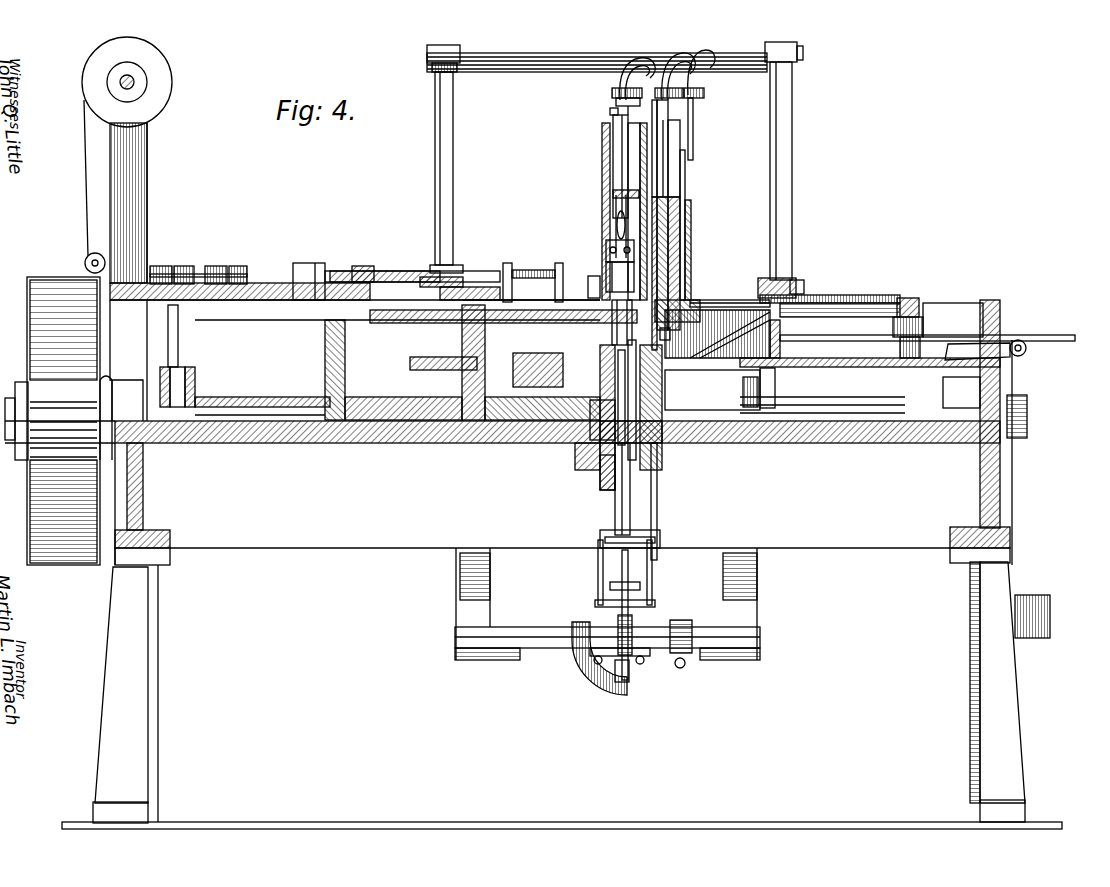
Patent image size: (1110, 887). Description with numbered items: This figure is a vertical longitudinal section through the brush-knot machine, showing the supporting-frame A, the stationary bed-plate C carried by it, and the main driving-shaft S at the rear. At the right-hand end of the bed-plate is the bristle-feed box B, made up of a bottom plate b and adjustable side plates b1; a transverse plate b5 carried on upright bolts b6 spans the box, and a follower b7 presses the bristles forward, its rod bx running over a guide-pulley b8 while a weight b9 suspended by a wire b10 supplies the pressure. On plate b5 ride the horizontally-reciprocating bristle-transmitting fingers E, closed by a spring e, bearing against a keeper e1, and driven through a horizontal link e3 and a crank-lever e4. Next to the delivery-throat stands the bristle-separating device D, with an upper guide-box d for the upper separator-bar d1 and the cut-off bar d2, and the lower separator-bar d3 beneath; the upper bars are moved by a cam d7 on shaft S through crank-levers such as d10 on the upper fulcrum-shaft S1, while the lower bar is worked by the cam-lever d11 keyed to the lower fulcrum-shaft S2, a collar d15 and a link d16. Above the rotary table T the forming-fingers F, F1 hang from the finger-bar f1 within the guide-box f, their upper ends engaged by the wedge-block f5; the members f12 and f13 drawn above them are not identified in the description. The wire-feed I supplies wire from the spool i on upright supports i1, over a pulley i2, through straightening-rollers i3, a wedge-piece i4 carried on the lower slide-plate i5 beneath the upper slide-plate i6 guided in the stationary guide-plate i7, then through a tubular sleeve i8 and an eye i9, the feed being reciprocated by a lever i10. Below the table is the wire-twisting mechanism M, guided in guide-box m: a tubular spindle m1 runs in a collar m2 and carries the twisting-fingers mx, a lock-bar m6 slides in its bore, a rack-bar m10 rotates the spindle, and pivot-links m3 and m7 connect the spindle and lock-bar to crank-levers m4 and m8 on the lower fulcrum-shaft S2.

The spool i is at (112, 92).
The upright supports i1 is at (135, 198).
The pulley i2 is at (85, 264).
The straightening-rollers i3 is at (166, 258).
The wire-feed I is at (198, 255).
The wedge-piece i4 is at (305, 268).
The lower slide-plate i5 is at (405, 271).
The upper slide-plate i6 is at (363, 266).
The stationary guide-plate i7 is at (228, 302).
The tubular sleeve i8 is at (520, 270).
The eye i9 is at (588, 283).
The lever i10 is at (194, 372).
The fulcrum-shaft S1 is at (598, 62).
The hook f13 is at (616, 88).
The cap f12 is at (620, 104).
The finger-bar f1 is at (618, 135).
The guide-box f is at (600, 158).
The wedge-shaped block f5 is at (612, 200).
The forming-finger F1 is at (606, 246).
The forming-finger F is at (606, 268).
The cam d7 is at (675, 86).
The crank-lever d10 is at (699, 105).
The upper separator-bar d1 is at (668, 192).
The bristle-cut-off bar d2 is at (680, 215).
The upper guide-box d is at (690, 232).
The bristle-separating device D is at (692, 240).
The bristle-transmitting fingers E is at (730, 286).
The spring e is at (743, 319).
The keeper e1 is at (755, 295).
The horizontal link e3 is at (804, 284).
The horizontal crank-lever e4 is at (795, 280).
The bristle-feed box B is at (888, 300).
The transverse plate b5 is at (912, 302).
The side plates b1 is at (950, 312).
The follower-rod bx is at (995, 334).
The guide-pulley b8 is at (1026, 350).
The follower b7 is at (749, 387).
The bottom plate b is at (822, 368).
The upright bolts b6 is at (905, 393).
The main driving-shaft S is at (1028, 418).
The bed-plate C is at (270, 443).
The supporting-frame A is at (140, 500).
The wire b10 is at (1014, 490).
The weight b9 is at (1032, 605).
The rotary table T is at (612, 348).
The wire-twisting mechanism M is at (617, 416).
The guide-box m is at (600, 385).
The twisting-fingers mx is at (649, 392).
The collar m2 is at (612, 445).
The rack-bar m10 is at (600, 428).
The lock-bar m6 is at (600, 462).
The tubular spindle m1 is at (615, 492).
The lower separator-bar d3 is at (658, 470).
The pivot-links m3 is at (598, 565).
The link d16 is at (655, 592).
The lower fulcrum-shaft S2 is at (545, 650).
The pivot-links m7 is at (600, 618).
The second crank-lever m8 is at (582, 660).
The crank-lever m4 is at (618, 680).
The collar d15 is at (684, 630).
The cam-lever d11 is at (678, 668).